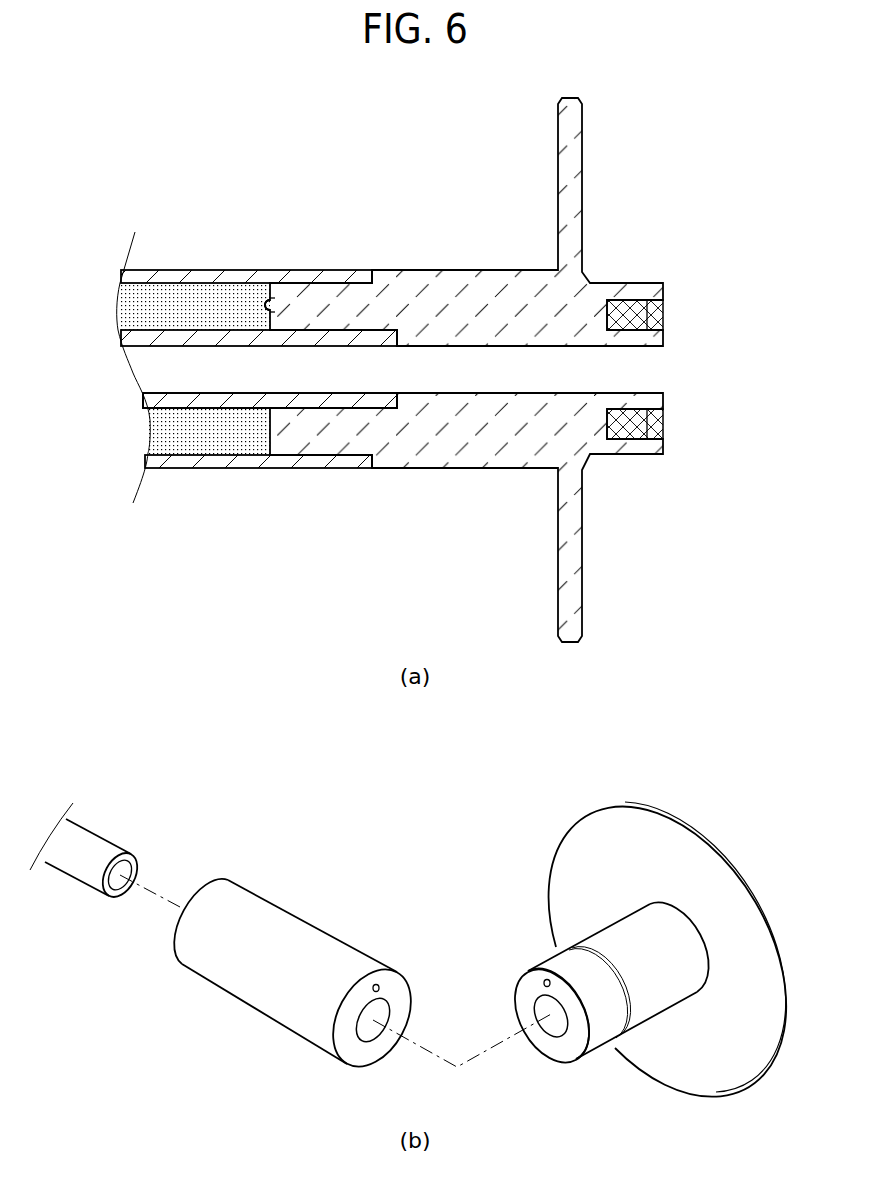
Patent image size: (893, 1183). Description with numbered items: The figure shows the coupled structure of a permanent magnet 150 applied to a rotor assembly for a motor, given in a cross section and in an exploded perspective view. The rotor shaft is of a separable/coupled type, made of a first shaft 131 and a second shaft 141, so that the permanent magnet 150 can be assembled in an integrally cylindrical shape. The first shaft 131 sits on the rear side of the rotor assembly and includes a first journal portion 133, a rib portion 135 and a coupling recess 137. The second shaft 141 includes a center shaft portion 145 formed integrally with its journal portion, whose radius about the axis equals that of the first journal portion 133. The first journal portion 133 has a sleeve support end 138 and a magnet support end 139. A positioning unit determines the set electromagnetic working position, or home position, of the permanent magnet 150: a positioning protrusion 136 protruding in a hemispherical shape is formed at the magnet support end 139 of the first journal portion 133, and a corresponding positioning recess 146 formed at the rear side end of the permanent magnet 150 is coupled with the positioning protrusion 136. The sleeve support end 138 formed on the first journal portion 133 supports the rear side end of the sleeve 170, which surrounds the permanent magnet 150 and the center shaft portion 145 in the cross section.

The first shaft 131 is at (467, 500).
The first journal portion 133 is at (498, 277).
The rib portion 135 is at (582, 165).
The positioning protrusion 136 is at (278, 305).
The coupling recess 137 is at (327, 397).
The sleeve support end 138 is at (362, 275).
The magnet support end 139 is at (270, 292).
The second shaft 141 is at (204, 415).
The center shaft portion 145 is at (208, 340).
The positioning recess 146 is at (262, 303).
The permanent magnet 150 is at (165, 293).
The sleeve 170 is at (233, 468).